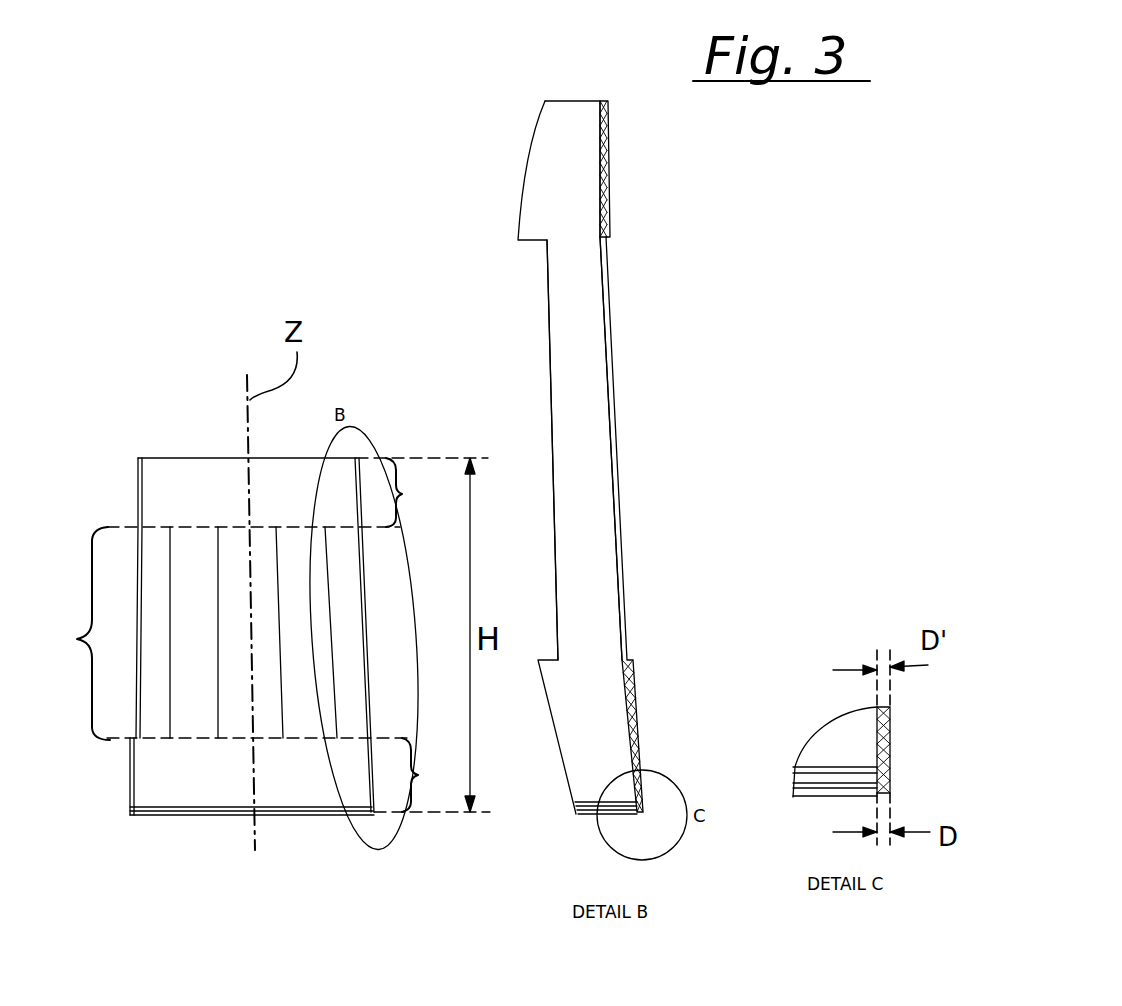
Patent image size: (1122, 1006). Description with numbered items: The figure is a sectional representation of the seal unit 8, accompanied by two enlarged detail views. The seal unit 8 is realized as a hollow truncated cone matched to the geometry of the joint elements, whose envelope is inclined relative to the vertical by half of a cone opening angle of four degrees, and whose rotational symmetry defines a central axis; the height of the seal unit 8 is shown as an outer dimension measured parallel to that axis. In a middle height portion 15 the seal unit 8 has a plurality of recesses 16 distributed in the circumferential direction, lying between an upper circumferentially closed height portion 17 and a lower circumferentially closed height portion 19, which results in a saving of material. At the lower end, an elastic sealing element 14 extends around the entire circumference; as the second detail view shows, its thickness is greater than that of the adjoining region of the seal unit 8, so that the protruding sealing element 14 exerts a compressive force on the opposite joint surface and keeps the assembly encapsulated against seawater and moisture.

The seal unit 8 is at (138, 452).
The elastic sealing element 14 is at (616, 812).
The height portion 15 is at (76, 633).
The recesses 16 is at (194, 550).
The upper circumferentially closed height portion 17 is at (414, 492).
The lower circumferentially closed height portion 19 is at (434, 775).